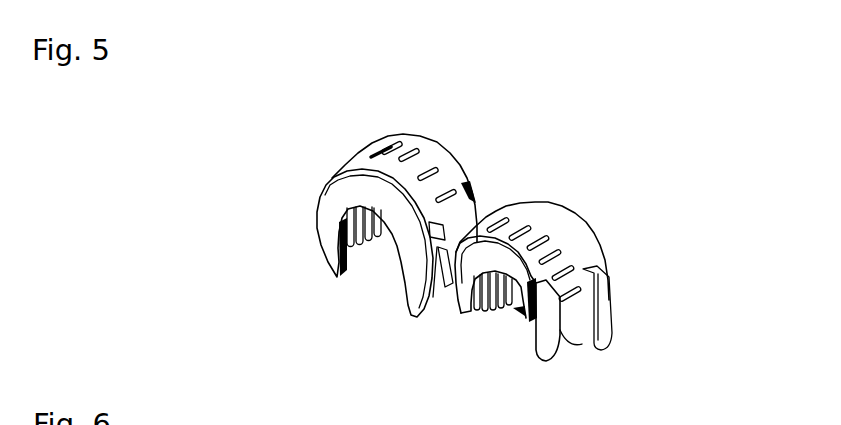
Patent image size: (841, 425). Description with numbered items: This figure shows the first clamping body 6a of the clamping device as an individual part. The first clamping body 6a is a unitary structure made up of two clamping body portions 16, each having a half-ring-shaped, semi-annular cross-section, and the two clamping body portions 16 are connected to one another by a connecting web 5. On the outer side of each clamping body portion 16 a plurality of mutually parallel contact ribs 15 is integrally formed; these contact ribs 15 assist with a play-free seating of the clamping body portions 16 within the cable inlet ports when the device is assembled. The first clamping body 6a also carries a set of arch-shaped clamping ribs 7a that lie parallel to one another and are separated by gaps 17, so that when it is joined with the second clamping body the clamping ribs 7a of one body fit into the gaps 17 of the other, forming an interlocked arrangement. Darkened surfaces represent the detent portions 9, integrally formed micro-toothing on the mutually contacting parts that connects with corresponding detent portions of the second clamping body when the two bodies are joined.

The first clamping body 6a is at (280, 201).
The clamping body portion 16 is at (368, 162).
The contact ribs 15 is at (436, 172).
The detent portions 9 is at (341, 279).
The connecting web 5 is at (443, 257).
The gaps 17 is at (483, 306).
The arch-shaped clamping ribs 7a is at (562, 350).